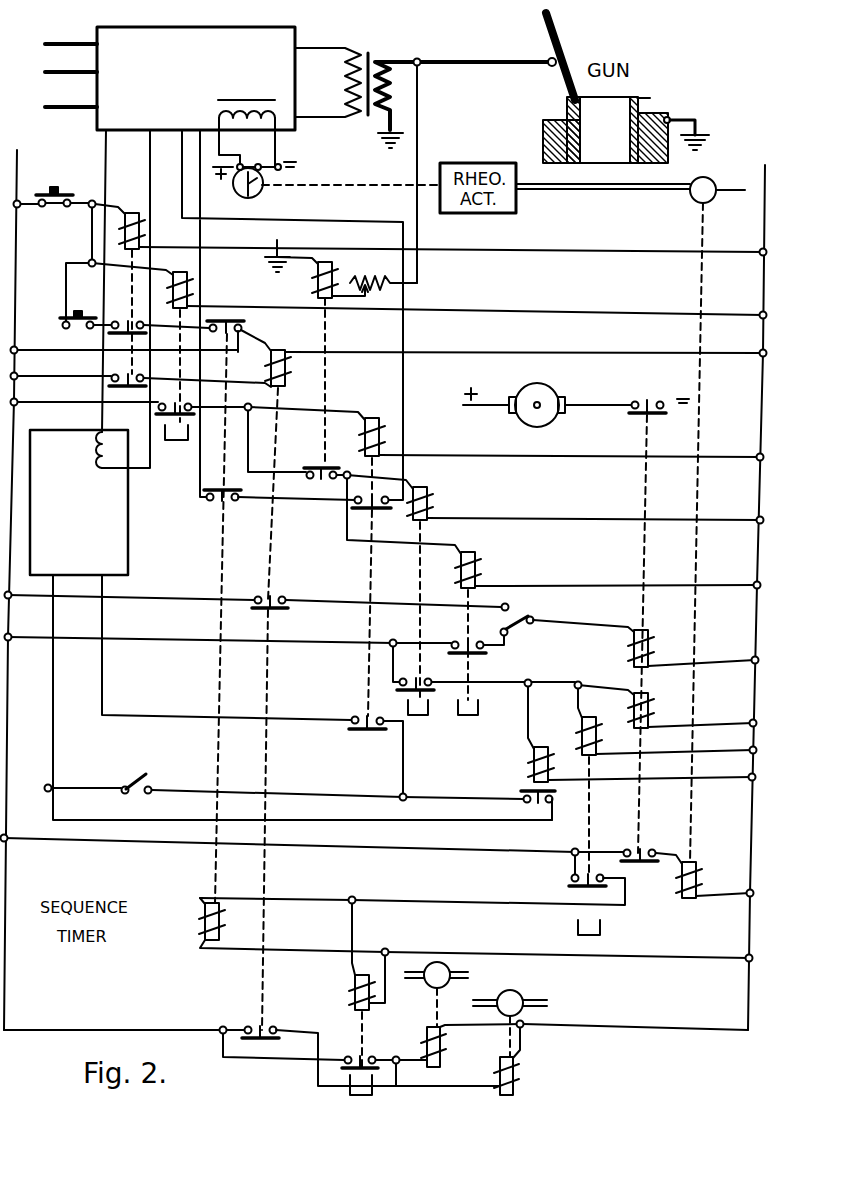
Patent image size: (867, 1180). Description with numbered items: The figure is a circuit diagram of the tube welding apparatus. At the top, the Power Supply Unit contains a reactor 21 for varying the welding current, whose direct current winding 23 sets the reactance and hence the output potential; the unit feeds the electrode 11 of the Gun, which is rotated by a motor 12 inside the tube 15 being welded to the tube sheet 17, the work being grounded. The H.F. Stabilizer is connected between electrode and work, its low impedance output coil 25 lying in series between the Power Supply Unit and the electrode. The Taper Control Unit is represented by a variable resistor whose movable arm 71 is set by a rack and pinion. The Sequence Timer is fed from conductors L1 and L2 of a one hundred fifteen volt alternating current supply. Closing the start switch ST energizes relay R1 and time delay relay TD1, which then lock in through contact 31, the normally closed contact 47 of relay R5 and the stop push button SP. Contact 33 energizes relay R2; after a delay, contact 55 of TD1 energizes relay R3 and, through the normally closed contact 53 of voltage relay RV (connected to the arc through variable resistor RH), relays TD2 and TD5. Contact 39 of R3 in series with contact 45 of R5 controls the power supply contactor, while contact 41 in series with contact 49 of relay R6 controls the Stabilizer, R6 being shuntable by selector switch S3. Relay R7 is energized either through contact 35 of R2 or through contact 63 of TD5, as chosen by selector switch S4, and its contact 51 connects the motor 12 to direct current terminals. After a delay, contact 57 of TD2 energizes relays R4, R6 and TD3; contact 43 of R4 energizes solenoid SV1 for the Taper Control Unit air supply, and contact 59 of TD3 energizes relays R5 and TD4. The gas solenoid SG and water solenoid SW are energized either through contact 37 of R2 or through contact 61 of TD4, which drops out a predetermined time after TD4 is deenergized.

The electrode 11 is at (568, 86).
The motor 12 is at (557, 392).
The tube 15 is at (673, 127).
The tube sheet 17 is at (545, 124).
The reactor 21 is at (274, 82).
The direct current winding 23 is at (295, 106).
The output coil 25 is at (80, 502).
The normally open contact 31 is at (159, 313).
The normally open contact 33 is at (142, 390).
The normally open contact 35 is at (275, 598).
The normally open contact 37 is at (263, 1029).
The normally open contact 39 is at (376, 516).
The normally open contact 41 is at (364, 710).
The normally open contact 43 is at (639, 857).
The normally closed contact 45 is at (217, 503).
The normally closed contact 47 is at (236, 321).
The normally closed contact 49 is at (523, 791).
The normally open contact 51 is at (659, 394).
The normally closed contact 53 is at (320, 468).
The normally open contact 55 is at (189, 412).
The normally open contact 57 is at (416, 680).
The normally open contact 59 is at (571, 886).
The normally open contact 61 is at (345, 1067).
The normally open contact 63 is at (479, 656).
The movable arm 71 is at (262, 190).
The conductor L1 is at (26, 581).
The conductor L2 is at (751, 590).
The start switch ST is at (72, 188).
The stop push button SP is at (85, 310).
The instantaneous relay R1 is at (132, 213).
The instantaneous relay R2 is at (514, 356).
The instantaneous relay R3 is at (372, 418).
The instantaneous relay R4 is at (643, 694).
The instantaneous relay R5 is at (215, 903).
The instantaneous relay R6 is at (541, 747).
The instantaneous relay R7 is at (643, 630).
The time delay relay TD1 is at (185, 262).
The time delay relay TD2 is at (422, 487).
The time delay relay TD3 is at (600, 710).
The time delay relay TD4 is at (352, 978).
The time delay relay TD5 is at (478, 540).
The voltage responsive relay RV is at (325, 262).
The variable resistor RH is at (374, 289).
The selector switch S3 is at (286, 781).
The selector switch S4 is at (559, 617).
The gas solenoid SG is at (462, 1014).
The water solenoid SW is at (510, 1032).
The solenoid SV1 is at (690, 862).